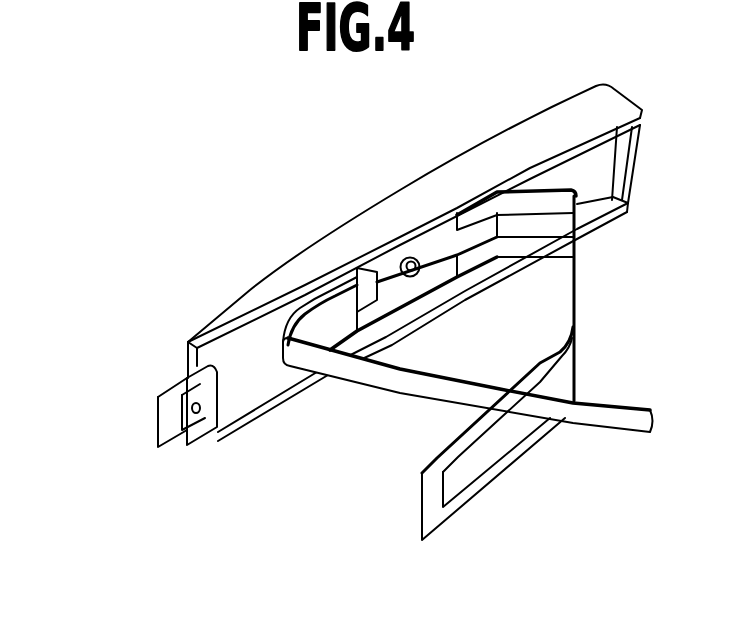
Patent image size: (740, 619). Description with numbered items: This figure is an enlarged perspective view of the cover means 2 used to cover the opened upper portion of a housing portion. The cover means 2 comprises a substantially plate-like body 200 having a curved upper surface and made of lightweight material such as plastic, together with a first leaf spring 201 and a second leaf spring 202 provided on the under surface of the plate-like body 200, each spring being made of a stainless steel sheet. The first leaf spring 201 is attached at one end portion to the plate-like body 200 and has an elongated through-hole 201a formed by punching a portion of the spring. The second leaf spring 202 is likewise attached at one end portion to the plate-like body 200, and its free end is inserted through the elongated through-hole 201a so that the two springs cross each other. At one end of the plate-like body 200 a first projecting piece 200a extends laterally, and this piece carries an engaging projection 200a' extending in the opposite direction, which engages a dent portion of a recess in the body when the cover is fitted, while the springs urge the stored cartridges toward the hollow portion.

The cover means 2 is at (511, 128).
The plate-like body 200 is at (303, 258).
The first projecting piece 200a is at (127, 412).
The engaging projection 200a' is at (197, 439).
The first leaf spring 201 is at (582, 302).
The elongated through-hole 201a is at (482, 457).
The second leaf spring 202 is at (372, 384).